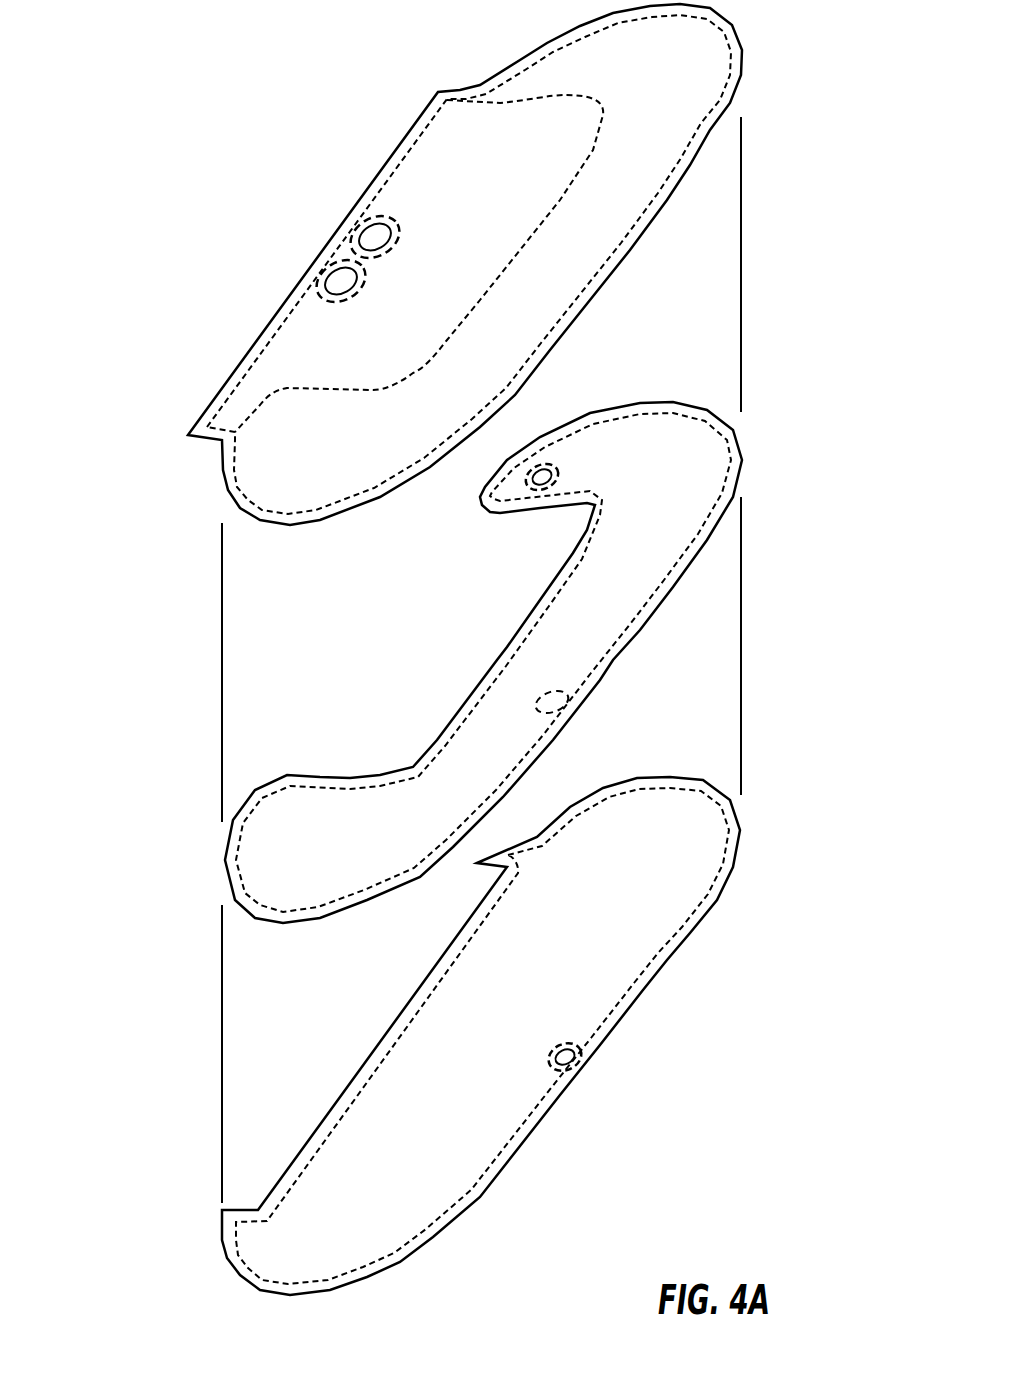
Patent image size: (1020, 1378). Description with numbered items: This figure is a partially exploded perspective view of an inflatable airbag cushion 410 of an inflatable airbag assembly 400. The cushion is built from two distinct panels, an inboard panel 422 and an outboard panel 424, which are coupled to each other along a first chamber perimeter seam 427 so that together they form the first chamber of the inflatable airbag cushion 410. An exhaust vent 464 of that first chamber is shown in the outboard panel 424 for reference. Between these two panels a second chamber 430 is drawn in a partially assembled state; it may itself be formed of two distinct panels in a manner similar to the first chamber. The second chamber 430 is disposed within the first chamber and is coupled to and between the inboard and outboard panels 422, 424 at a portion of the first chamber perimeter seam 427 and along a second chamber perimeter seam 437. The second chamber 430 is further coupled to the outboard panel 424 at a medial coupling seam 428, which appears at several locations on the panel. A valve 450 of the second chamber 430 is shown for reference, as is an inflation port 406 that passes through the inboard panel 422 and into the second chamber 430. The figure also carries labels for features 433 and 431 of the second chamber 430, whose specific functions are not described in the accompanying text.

The inflatable airbag assembly 400 is at (156, 97).
The inflatable airbag cushion 410 is at (118, 185).
The outboard panel 424 is at (640, 178).
The second chamber 430 is at (378, 858).
The inboard panel 422 is at (587, 960).
The first chamber perimeter seam 427 is at (713, 32).
The medial coupling seam 428 is at (568, 182).
The exhaust vent 464 is at (335, 266).
The valve 450 is at (546, 458).
The strap portion 433 is at (540, 665).
The second chamber perimeter seam 437 is at (623, 640).
The fold line 431 is at (512, 708).
The inflation port 406 is at (570, 694).